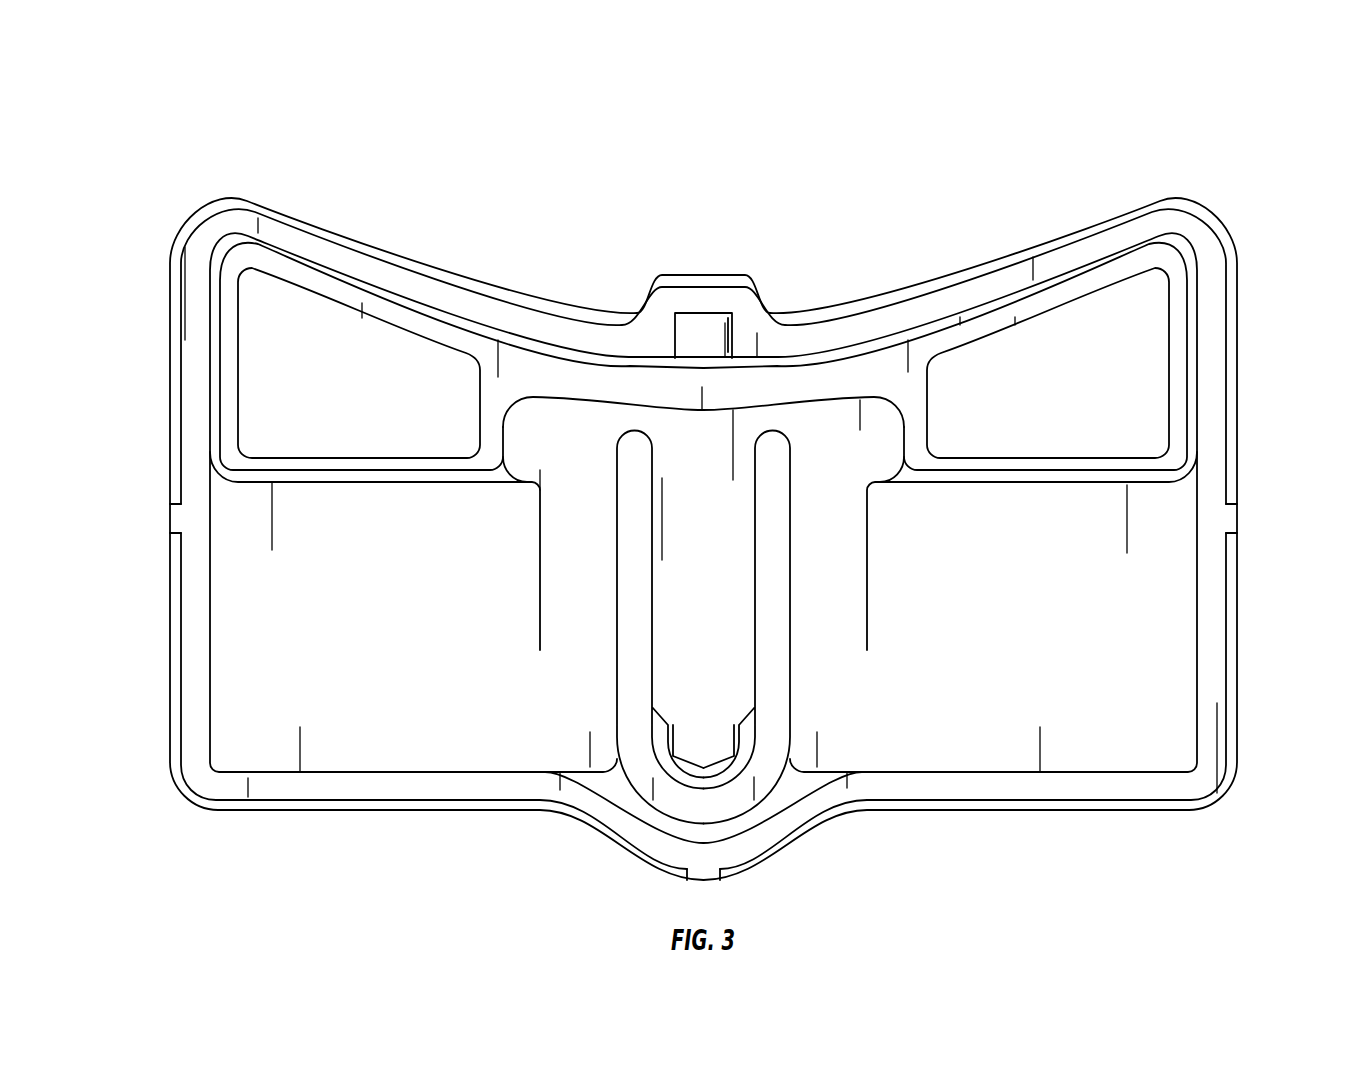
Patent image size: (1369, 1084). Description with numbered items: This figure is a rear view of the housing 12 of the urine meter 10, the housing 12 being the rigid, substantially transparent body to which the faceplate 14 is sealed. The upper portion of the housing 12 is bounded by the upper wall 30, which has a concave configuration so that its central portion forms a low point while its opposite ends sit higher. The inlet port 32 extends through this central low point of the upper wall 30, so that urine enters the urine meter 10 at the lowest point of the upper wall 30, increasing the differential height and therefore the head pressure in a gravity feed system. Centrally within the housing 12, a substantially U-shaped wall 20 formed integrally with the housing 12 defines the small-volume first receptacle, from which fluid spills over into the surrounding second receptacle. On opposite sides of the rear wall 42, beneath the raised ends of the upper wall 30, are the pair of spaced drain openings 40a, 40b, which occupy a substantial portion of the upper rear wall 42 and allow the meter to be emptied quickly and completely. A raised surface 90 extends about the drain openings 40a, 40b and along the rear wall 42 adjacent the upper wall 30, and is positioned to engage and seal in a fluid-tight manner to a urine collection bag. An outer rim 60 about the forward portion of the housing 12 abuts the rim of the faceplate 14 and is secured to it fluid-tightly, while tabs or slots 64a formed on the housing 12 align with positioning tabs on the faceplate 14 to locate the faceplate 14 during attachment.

The urine meter 10 is at (1058, 80).
The housing 12 is at (583, 319).
The faceplate 14 is at (1138, 202).
The U-shaped wall 20 is at (627, 652).
The upper wall 30 is at (858, 347).
The inlet port 32 is at (731, 333).
The drain opening 40a is at (1102, 390).
The drain opening 40b is at (298, 378).
The rear wall 42 is at (843, 432).
The outer rim 60 is at (192, 693).
The tabs or slots 64a is at (177, 518).
The raised surface 90 is at (420, 330).